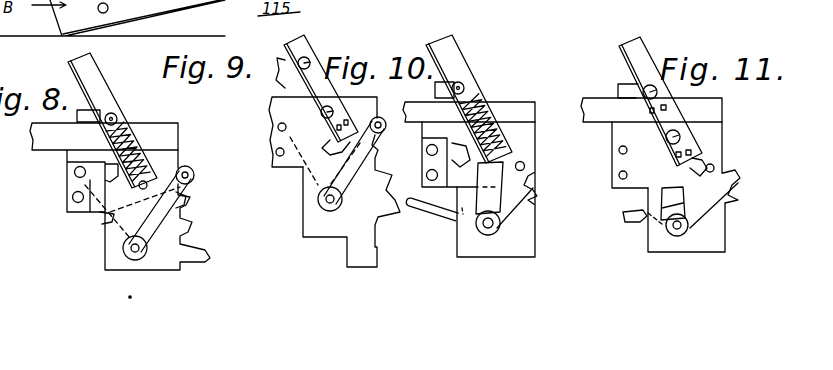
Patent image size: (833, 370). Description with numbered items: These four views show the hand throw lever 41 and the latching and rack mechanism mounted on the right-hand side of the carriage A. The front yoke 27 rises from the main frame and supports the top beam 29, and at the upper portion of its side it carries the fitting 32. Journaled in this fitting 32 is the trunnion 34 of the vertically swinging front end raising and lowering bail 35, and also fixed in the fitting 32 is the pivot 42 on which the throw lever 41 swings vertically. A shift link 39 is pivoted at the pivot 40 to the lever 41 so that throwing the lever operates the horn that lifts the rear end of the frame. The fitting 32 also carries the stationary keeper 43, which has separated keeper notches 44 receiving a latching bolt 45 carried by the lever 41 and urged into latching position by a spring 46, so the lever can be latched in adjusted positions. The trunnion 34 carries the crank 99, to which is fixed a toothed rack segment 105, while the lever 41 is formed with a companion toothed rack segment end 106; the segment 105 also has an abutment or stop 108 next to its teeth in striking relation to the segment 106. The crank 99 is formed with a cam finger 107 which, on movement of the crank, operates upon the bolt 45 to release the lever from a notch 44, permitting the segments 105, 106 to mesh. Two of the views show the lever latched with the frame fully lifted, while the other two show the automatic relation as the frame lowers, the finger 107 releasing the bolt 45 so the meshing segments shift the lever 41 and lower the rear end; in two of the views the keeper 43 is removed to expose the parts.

In FIG. 9, the front yoke 27 is at (350, 258).
In FIG. 8, the top beam 29 is at (36, 151).
In FIG. 8, the fitting 32 is at (105, 262).
In FIG. 9, the fitting 32 is at (303, 211).
In FIG. 10, the fitting 32 is at (457, 246).
In FIG. 11, the fitting 32 is at (713, 245).
In FIG. 8, the trunnion 34 is at (124, 250).
In FIG. 9, the trunnion 34 is at (330, 210).
In FIG. 10, the trunnion 34 is at (494, 232).
In FIG. 11, the trunnion 34 is at (665, 230).
In FIG. 8, the front end raising and lowering bail 35 is at (100, 218).
In FIG. 9, the front end raising and lowering bail 35 is at (293, 178).
In FIG. 10, the front end raising and lowering bail 35 is at (428, 222).
In FIG. 11, the front end raising and lowering bail 35 is at (635, 221).
In FIG. 8, the shift link 39 is at (77, 116).
In FIG. 9, the shift link 39 is at (283, 89).
In FIG. 10, the shift link 39 is at (435, 89).
In FIG. 11, the shift link 39 is at (630, 82).
In FIG. 8, the pivot 40 is at (114, 113).
In FIG. 9, the pivot 40 is at (305, 62).
In FIG. 10, the pivot 40 is at (466, 88).
In FIG. 11, the pivot 40 is at (658, 92).
In FIG. 8, the throw lever 41 is at (86, 68).
In FIG. 9, the throw lever 41 is at (288, 50).
In FIG. 10, the throw lever 41 is at (448, 50).
In FIG. 11, the throw lever 41 is at (620, 58).
In FIG. 8, the pivot 42 is at (162, 154).
In FIG. 9, the pivot 42 is at (321, 112).
In FIG. 10, the pivot 42 is at (518, 127).
In FIG. 11, the pivot 42 is at (676, 131).
In FIG. 8, the keeper 43 is at (112, 243).
In FIG. 9, the keeper 43 is at (380, 170).
In FIG. 10, the keeper 43 is at (515, 208).
In FIG. 11, the keeper 43 is at (714, 205).
In FIG. 8, the keeper notches 44 is at (78, 184).
In FIG. 9, the keeper notches 44 is at (323, 132).
In FIG. 10, the keeper notches 44 is at (469, 144).
In FIG. 11, the keeper notches 44 is at (651, 143).
In FIG. 8, the latching bolt 45 is at (174, 166).
In FIG. 10, the latching bolt 45 is at (518, 148).
In FIG. 8, the spring 46 is at (124, 134).
In FIG. 10, the spring 46 is at (490, 116).
In FIG. 8, the crank 99 is at (176, 200).
In FIG. 9, the crank 99 is at (342, 208).
In FIG. 10, the crank 99 is at (510, 218).
In FIG. 11, the crank 99 is at (672, 188).
In FIG. 8, the toothed rack segment 105 is at (180, 233).
In FIG. 9, the toothed rack segment 105 is at (377, 252).
In FIG. 10, the toothed rack segment 105 is at (547, 192).
In FIG. 11, the toothed rack segment 105 is at (740, 180).
In FIG. 9, the toothed rack segment end 106 is at (290, 156).
In FIG. 11, the toothed rack segment end 106 is at (705, 147).
In FIG. 8, the cam finger 107 is at (190, 206).
In FIG. 9, the cam finger 107 is at (376, 134).
In FIG. 10, the cam finger 107 is at (527, 168).
In FIG. 11, the cam finger 107 is at (710, 168).
In FIG. 8, the abutment or stop 108 is at (203, 253).
In FIG. 9, the abutment or stop 108 is at (378, 218).
In FIG. 10, the abutment or stop 108 is at (543, 195).
In FIG. 11, the abutment or stop 108 is at (738, 198).
In FIG. 8, the carriage A is at (200, 132).
In FIG. 9, the carriage A is at (346, 248).
In FIG. 10, the carriage A is at (542, 251).
In FIG. 11, the carriage A is at (721, 171).